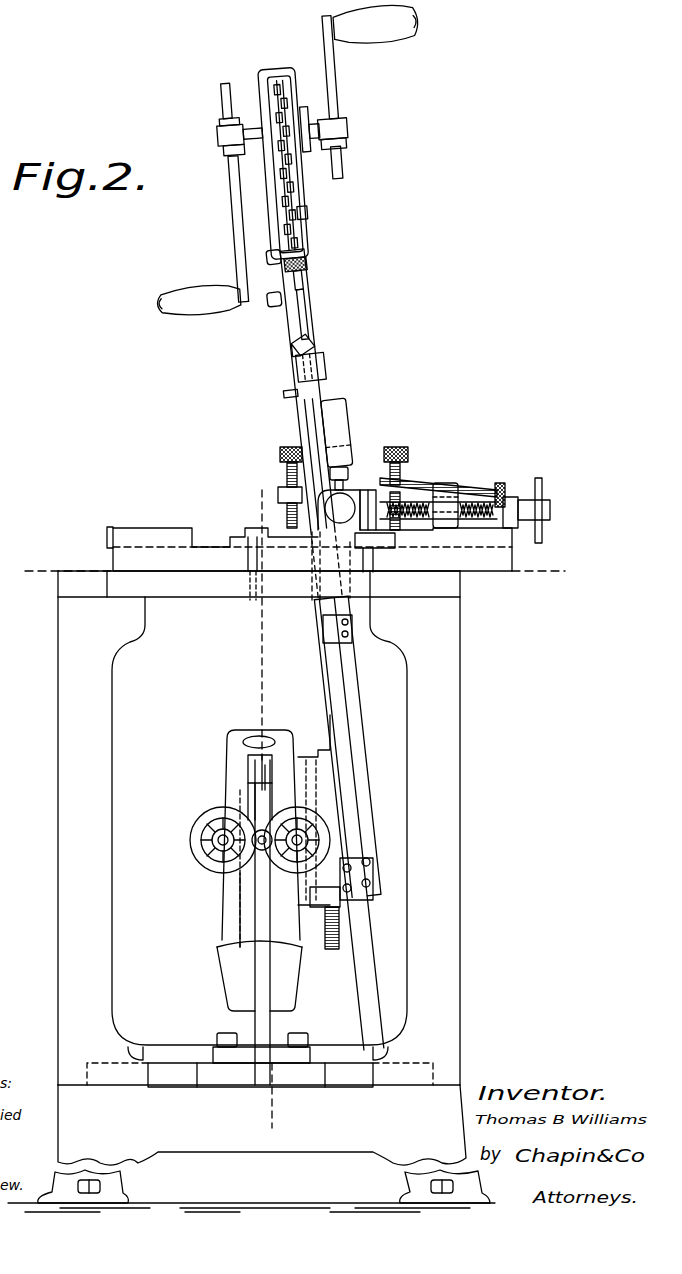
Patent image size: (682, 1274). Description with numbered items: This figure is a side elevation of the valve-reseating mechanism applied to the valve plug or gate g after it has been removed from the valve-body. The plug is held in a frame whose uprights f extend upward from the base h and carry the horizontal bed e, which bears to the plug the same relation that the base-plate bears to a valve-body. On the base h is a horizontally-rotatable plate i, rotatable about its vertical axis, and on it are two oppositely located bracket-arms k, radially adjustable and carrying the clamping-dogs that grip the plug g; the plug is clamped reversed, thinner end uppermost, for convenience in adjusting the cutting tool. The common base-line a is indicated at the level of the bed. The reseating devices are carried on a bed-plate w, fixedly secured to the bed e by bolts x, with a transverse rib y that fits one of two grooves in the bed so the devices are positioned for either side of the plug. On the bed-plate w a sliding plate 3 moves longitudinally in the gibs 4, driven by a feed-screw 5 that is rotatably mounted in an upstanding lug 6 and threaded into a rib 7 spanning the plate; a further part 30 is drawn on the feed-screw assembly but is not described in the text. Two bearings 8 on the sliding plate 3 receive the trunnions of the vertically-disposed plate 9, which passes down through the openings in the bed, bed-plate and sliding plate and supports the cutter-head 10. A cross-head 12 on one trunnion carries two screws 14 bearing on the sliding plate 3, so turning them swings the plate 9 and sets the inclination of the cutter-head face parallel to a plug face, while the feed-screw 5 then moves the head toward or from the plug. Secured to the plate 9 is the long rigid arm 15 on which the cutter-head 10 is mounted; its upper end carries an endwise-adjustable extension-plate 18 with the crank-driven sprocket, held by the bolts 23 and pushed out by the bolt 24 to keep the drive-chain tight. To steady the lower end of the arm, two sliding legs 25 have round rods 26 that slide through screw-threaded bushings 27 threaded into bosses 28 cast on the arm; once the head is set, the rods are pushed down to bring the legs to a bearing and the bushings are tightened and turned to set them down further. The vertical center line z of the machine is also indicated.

The sliding plate 3 is at (121, 525).
The gibs 4 is at (160, 534).
The feed-screw 5 is at (545, 510).
The upstanding lug 6 is at (515, 498).
The rib 7 is at (443, 487).
The bearings 8 is at (342, 492).
The vertically-disposed plate 9 is at (342, 413).
The cutter-head 10 is at (318, 745).
The cross-head 12 is at (282, 488).
The screws 14 is at (410, 457).
The arm 15 is at (318, 292).
The extension-plate 18 is at (303, 174).
The bolts 23 is at (274, 302).
The bolt 24 is at (310, 215).
The sliding legs 25 is at (338, 702).
The round rods 26 is at (307, 317).
The screw-threaded bushings 27 is at (315, 342).
The bosses 28 is at (327, 365).
The threaded rod spring 30 is at (472, 487).
The base-line a is at (290, 564).
The horizontal bed e is at (67, 589).
The uprights f is at (452, 948).
The valve plug or gate g is at (225, 927).
The base h is at (251, 1148).
The horizontally-rotatable plate i is at (168, 1068).
The bracket-arms k is at (254, 980).
The bed-plate w is at (105, 566).
The bolts x is at (253, 525).
The rib y is at (300, 585).
The axis line z- z is at (267, 803).